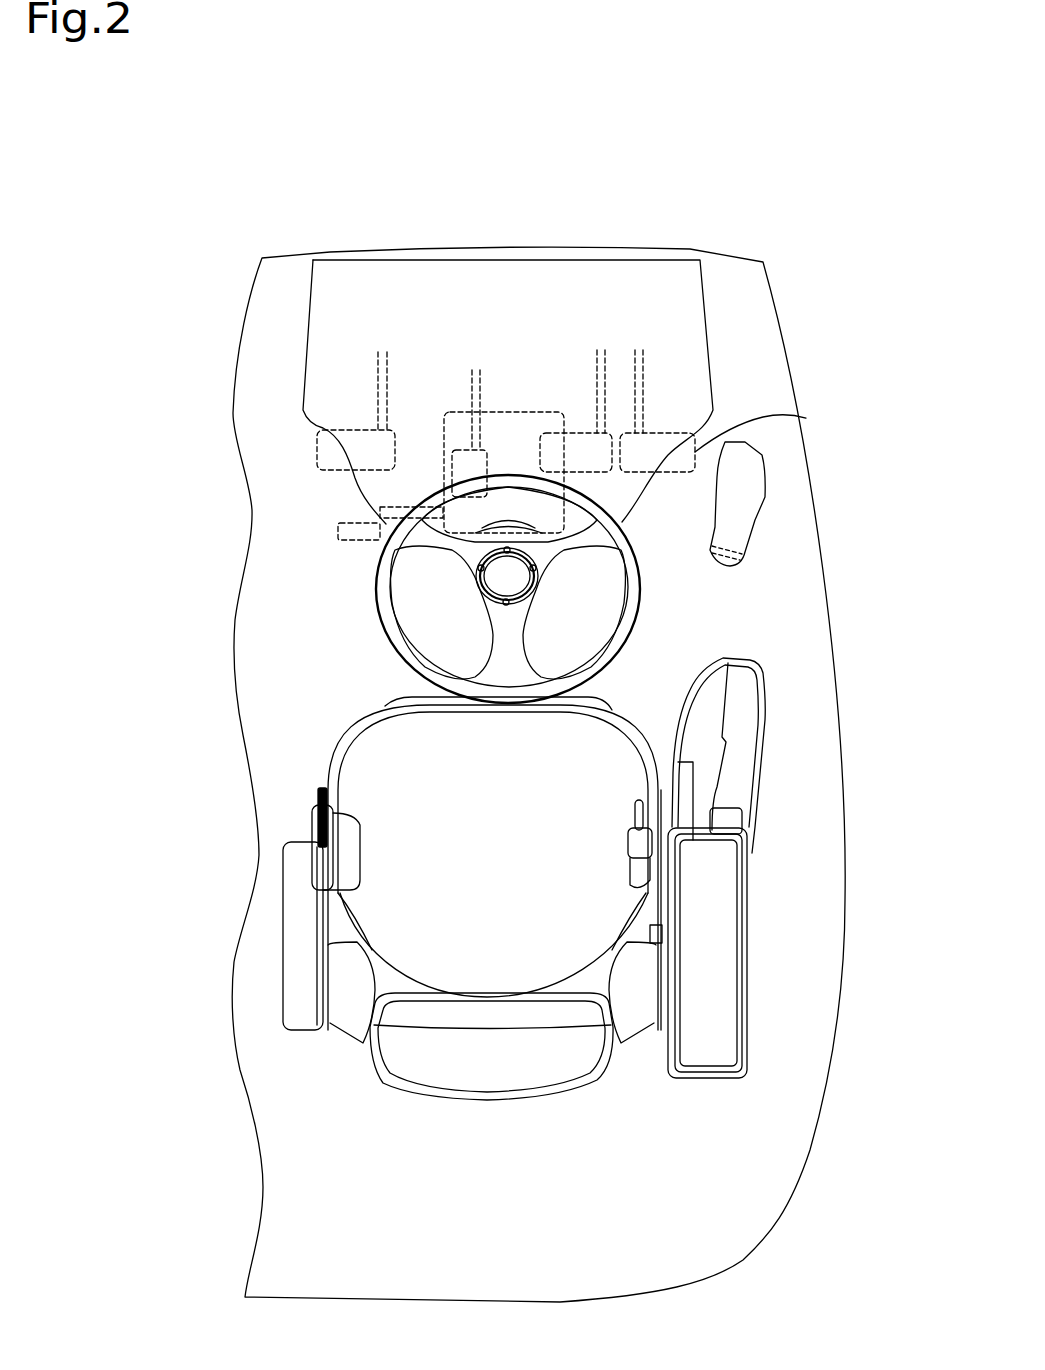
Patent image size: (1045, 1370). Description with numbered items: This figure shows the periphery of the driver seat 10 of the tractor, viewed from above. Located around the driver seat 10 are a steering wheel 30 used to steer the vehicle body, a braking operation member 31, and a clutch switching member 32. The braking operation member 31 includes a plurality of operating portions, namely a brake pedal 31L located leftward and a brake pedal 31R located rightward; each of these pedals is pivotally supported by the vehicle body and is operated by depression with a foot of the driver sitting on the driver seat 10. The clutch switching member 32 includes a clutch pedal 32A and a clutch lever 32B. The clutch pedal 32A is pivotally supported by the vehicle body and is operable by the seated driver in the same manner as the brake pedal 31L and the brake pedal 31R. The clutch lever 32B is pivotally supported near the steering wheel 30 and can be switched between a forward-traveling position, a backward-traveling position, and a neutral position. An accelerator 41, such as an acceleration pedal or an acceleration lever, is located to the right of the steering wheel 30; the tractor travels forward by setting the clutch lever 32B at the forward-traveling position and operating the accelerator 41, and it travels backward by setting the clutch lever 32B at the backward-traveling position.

The driver seat 10 is at (332, 738).
The steering wheel 30 is at (377, 632).
The braking operation member 31 is at (698, 427).
The brake pedal 31L is at (602, 432).
The brake pedal 31R is at (751, 411).
The clutch switching member 32 is at (258, 450).
The clutch pedal 32A is at (317, 450).
The clutch lever 32B is at (338, 530).
The accelerator 41 is at (745, 478).